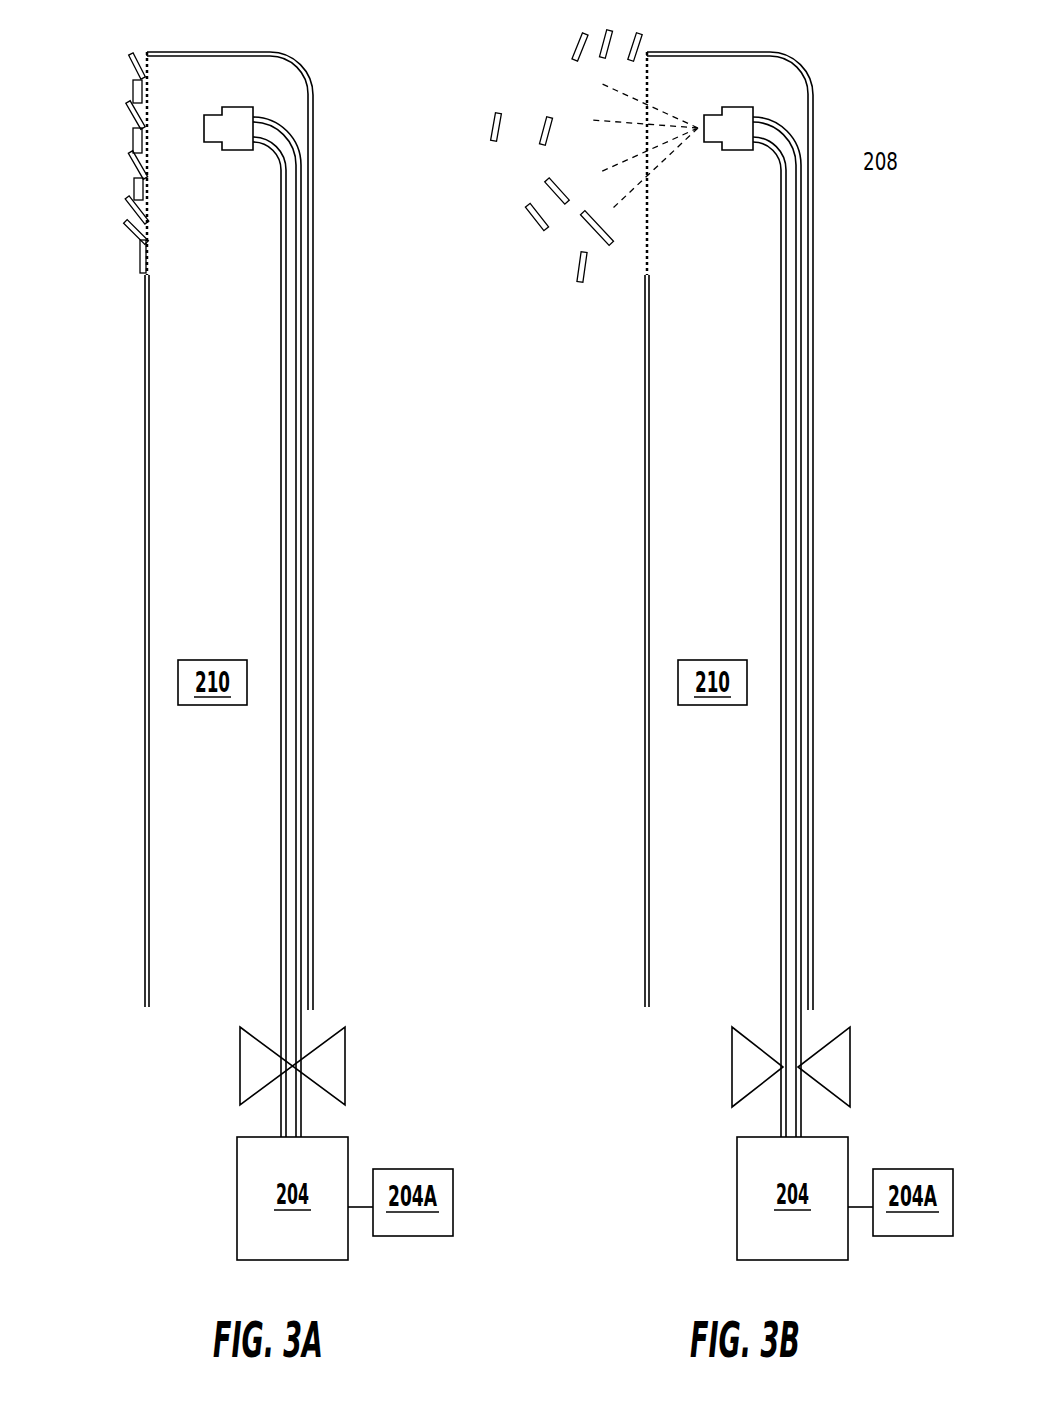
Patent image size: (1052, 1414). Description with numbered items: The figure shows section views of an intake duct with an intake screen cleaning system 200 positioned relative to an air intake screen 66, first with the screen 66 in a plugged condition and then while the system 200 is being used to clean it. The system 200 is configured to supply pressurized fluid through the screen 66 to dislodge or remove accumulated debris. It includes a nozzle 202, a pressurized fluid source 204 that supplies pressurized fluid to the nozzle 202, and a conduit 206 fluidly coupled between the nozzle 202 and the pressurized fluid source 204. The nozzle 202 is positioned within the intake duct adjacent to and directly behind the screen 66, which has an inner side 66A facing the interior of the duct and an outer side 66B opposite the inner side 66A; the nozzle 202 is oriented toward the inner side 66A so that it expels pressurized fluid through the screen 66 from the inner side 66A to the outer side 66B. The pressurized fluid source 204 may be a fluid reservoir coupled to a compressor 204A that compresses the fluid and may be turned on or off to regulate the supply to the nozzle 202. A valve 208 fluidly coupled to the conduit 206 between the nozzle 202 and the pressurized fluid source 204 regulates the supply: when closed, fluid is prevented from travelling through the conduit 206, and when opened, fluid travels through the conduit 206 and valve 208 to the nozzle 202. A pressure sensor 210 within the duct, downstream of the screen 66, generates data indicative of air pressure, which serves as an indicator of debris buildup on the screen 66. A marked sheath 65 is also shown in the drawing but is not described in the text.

In FIG. 3A, the intake screen cleaning system 200 is at (60, 70).
In FIG. 3B, the intake screen cleaning system 200 is at (901, 35).
In FIG. 3A, the nozzle 202 is at (277, 83).
In FIG. 3B, the nozzle 202 is at (720, 112).
In FIG. 3A, the pressurized fluid source 204 is at (292, 1198).
In FIG. 3B, the pressurized fluid source 204 is at (792, 1198).
In FIG. 3A, the compressor 204A is at (400, 1202).
In FIG. 3B, the compressor 204A is at (900, 1202).
In FIG. 3A, the conduit 206 is at (314, 627).
In FIG. 3B, the conduit 206 is at (814, 627).
In FIG. 3A, the valve 208 is at (322, 1060).
In FIG. 3B, the valve 208 is at (818, 1061).
In FIG. 3A, the pressure sensor 210 is at (212, 682).
In FIG. 3B, the pressure sensor 210 is at (712, 682).
In FIG. 3A, the sheath 65 is at (149, 275).
In FIG. 3B, the sheath 65 is at (729, 531).
In FIG. 3A, the air intake screen 66 is at (131, 232).
In FIG. 3B, the air intake screen 66 is at (567, 156).
In FIG. 3A, the inner side 66A is at (150, 210).
In FIG. 3B, the inner side 66A is at (684, 163).
In FIG. 3A, the outer side 66B is at (138, 200).
In FIG. 3B, the outer side 66B is at (595, 192).